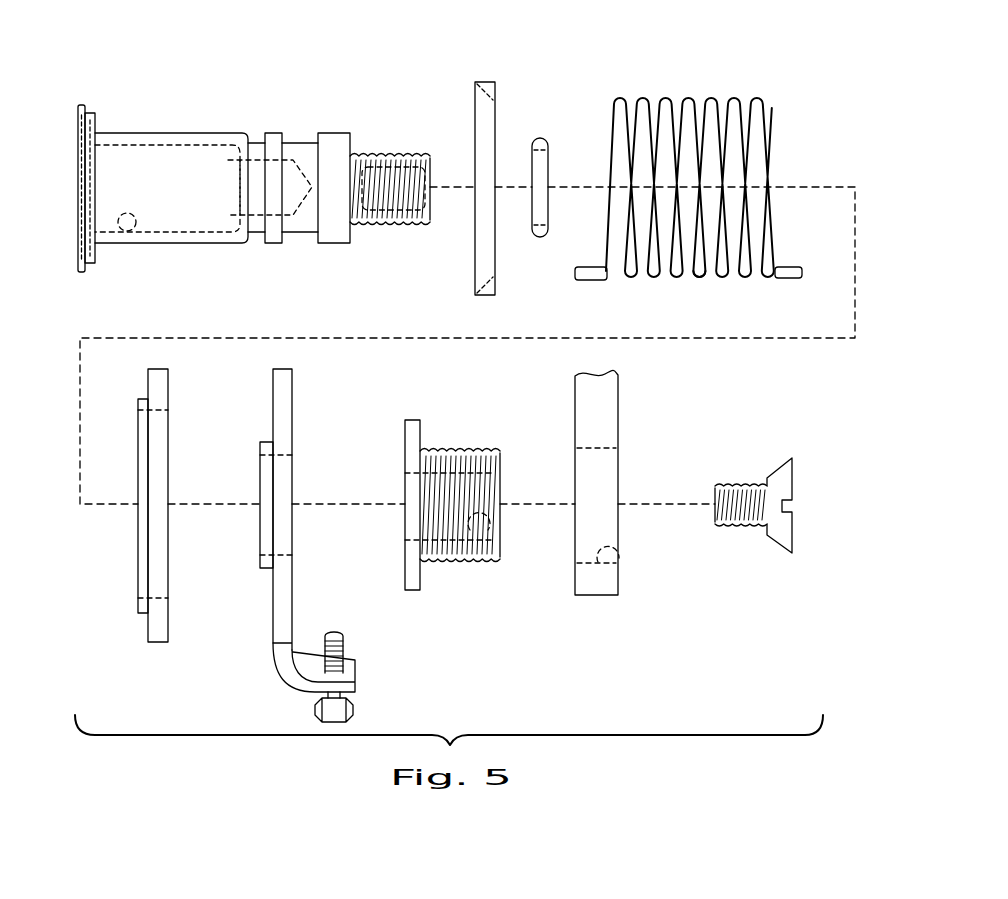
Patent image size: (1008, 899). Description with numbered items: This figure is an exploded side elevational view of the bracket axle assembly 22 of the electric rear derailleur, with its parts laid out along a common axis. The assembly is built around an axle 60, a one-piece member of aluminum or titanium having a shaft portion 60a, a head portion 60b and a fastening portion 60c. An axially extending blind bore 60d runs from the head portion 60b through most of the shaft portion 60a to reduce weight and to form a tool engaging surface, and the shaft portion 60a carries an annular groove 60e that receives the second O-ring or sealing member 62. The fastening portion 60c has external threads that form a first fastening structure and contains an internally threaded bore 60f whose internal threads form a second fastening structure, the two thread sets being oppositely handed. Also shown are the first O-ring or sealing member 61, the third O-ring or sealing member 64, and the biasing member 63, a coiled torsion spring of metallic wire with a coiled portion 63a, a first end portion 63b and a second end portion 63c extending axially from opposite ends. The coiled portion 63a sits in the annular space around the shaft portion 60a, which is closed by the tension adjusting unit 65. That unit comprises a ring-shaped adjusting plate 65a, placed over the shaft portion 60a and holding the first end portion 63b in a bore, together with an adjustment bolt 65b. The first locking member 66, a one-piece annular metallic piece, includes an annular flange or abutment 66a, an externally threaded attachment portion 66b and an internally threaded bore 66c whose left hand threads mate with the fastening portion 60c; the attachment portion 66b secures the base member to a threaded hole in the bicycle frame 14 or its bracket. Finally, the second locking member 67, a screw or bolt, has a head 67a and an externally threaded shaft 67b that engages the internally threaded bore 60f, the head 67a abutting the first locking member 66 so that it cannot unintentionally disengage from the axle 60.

The bracket axle assembly 22 is at (770, 68).
The axle 60 is at (180, 131).
The shaft portion 60a is at (200, 248).
The head portion 60b is at (80, 113).
The fastening portion 60c is at (393, 231).
The blind bore 60d is at (128, 230).
The annular groove 60e is at (258, 140).
The internally threaded bore 60f is at (433, 170).
The first O-ring or sealing member 61 is at (497, 106).
The second O-ring or sealing member 62 is at (550, 157).
The biasing member 63 is at (713, 98).
The coiled portion 63a is at (698, 278).
The first end portion 63b is at (792, 266).
The second end portion 63c is at (592, 267).
The third O-ring or sealing member 64 is at (171, 401).
The tension adjusting unit 65 is at (297, 405).
The adjusting plate 65a is at (293, 595).
The adjustment bolt 65b is at (335, 633).
The first locking member 66 is at (455, 442).
The annular flange or abutment 66a is at (405, 590).
The externally threaded attachment portion 66b is at (447, 565).
The internally threaded bore 66c is at (486, 534).
The bicycle frame 14 is at (620, 408).
The second locking member 67 is at (790, 452).
The head 67a is at (768, 540).
The externally threaded shaft 67b is at (733, 484).